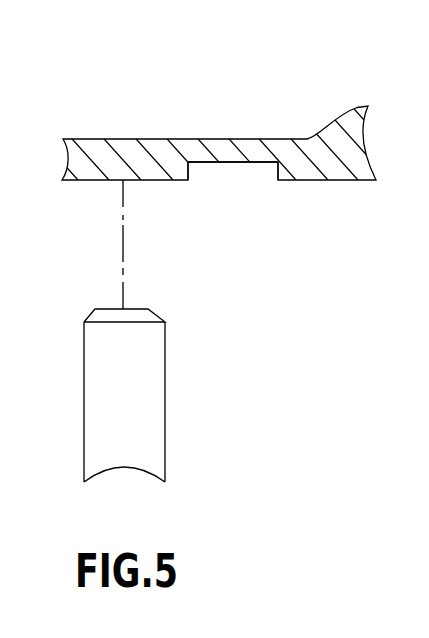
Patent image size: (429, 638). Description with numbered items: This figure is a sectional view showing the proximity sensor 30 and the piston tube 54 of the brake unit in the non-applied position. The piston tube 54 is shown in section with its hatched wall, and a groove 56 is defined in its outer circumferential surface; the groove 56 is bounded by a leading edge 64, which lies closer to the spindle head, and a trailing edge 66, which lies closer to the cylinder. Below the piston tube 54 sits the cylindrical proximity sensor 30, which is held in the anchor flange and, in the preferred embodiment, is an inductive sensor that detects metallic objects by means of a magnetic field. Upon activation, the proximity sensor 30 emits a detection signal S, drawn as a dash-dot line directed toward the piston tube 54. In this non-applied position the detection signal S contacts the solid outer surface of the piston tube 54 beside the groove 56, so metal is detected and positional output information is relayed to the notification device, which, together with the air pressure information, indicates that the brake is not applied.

The piston tube 54 is at (318, 180).
The groove 56 is at (230, 162).
The leading edge 64 is at (188, 180).
The trailing edge 66 is at (278, 180).
The proximity sensor 30 is at (165, 428).
The detection signal S is at (122, 245).